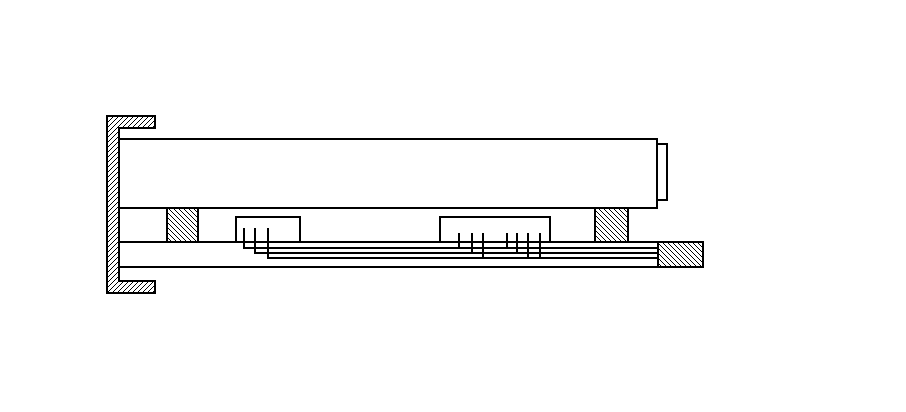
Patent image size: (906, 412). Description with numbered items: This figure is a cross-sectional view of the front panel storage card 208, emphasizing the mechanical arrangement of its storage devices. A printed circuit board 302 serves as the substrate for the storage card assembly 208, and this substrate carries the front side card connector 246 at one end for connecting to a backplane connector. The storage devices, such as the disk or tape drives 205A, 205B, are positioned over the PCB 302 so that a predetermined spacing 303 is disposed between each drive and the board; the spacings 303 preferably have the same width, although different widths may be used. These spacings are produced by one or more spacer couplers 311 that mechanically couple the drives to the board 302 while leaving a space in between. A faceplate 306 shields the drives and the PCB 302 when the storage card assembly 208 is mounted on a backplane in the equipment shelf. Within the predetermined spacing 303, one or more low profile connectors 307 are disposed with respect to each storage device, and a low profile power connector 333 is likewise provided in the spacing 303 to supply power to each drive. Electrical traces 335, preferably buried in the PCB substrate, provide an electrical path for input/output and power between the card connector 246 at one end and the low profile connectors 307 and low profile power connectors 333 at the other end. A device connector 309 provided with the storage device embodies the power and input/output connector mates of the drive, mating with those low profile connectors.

The front panel storage card 208 is at (535, 70).
The disk or tape drive 205A is at (440, 156).
The disk or tape drive 205B is at (388, 173).
The faceplate 306 is at (101, 223).
The device connector 309 is at (700, 169).
The printed circuit board 302 is at (411, 275).
The front side card connector 246 is at (718, 243).
The spacer coupler 311 is at (397, 202).
The low profile power connector 333 is at (294, 211).
The predetermined spacing 303 is at (468, 201).
The conductive traces 335 is at (451, 265).
The low profile connector 307 is at (486, 183).